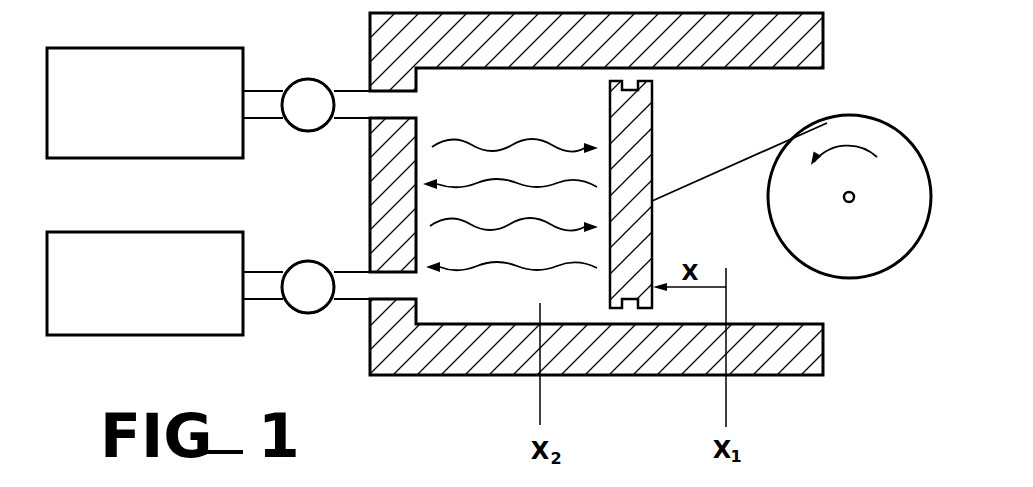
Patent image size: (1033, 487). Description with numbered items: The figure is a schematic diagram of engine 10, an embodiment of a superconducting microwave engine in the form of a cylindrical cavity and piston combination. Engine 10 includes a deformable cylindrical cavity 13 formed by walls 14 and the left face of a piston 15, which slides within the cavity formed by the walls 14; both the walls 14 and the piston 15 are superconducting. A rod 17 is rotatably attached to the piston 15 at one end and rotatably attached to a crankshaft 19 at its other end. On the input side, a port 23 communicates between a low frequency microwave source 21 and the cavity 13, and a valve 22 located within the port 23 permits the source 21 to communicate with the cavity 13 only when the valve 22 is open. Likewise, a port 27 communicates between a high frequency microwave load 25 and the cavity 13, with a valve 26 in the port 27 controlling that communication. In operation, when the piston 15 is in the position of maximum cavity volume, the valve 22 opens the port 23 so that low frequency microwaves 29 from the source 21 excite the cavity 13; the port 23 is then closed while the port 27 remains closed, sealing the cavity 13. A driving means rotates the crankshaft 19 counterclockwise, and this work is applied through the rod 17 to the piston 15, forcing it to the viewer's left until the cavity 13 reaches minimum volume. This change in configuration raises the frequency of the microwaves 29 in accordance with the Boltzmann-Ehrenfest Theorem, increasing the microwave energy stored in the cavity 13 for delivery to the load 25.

The engine 10 is at (645, 187).
The deformable cylindrical cavity 13 is at (485, 308).
The walls 14 is at (582, 25).
The piston 15 is at (652, 118).
The rod 17 is at (735, 165).
The crankshaft 19 is at (832, 245).
The low frequency microwave source 21 is at (106, 113).
The valve 22 is at (307, 133).
The port 23 is at (262, 100).
The high frequency microwave load 25 is at (152, 296).
The valve 26 is at (306, 316).
The port 27 is at (263, 278).
The microwaves 29 is at (525, 140).